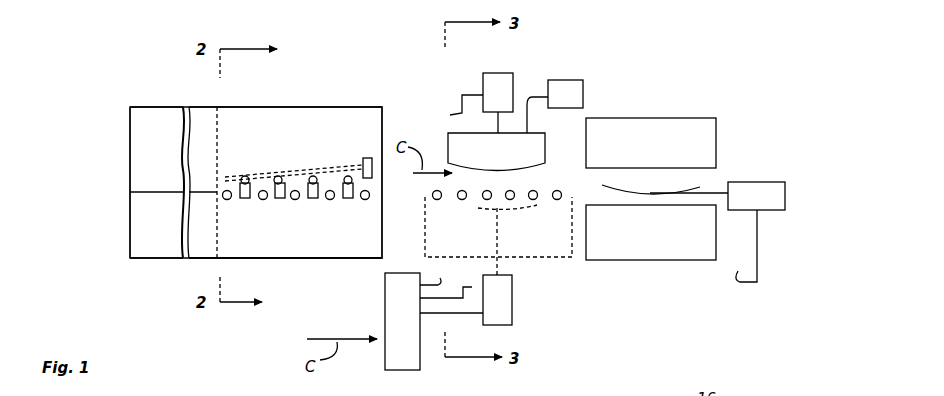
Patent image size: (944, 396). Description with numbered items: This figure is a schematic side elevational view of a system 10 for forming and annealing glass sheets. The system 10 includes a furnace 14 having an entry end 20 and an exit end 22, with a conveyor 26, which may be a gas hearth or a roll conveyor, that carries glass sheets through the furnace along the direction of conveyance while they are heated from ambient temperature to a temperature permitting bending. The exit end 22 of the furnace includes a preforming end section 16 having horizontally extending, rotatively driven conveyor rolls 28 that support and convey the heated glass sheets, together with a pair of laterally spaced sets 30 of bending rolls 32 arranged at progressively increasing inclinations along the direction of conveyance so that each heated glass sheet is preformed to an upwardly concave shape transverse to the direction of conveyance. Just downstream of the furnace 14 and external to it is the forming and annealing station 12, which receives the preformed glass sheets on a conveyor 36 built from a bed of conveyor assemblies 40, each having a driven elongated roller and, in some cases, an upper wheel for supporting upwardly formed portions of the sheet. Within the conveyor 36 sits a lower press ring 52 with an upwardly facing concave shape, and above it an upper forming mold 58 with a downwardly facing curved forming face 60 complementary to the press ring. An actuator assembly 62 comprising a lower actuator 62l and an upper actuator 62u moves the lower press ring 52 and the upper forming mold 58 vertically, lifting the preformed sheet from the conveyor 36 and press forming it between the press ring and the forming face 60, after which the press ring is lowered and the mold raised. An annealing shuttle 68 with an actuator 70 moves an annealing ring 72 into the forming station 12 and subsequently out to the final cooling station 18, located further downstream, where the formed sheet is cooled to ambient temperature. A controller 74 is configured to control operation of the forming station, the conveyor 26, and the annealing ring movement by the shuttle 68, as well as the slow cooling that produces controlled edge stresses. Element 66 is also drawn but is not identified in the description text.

The system 10 is at (592, 68).
The forming and annealing station 12 is at (472, 81).
The furnace 14 is at (163, 72).
The preforming end section 16 is at (325, 100).
The final cooling station 18 is at (672, 100).
The entry end 20 is at (152, 106).
The exit end 22 is at (315, 262).
The conveyor 26 is at (153, 190).
The conveyor rolls 28 is at (363, 199).
The sets of bending rolls 30 is at (292, 163).
The bending rolls 32 is at (346, 176).
The conveyor 36 is at (553, 218).
The conveyor assemblies 40 is at (463, 200).
The lower press ring 52 is at (533, 203).
The upper forming mold 58 is at (440, 134).
The forming face 60 is at (530, 177).
The actuator assembly 62 is at (537, 341).
The upper actuator 62u is at (497, 78).
The lower actuator 62l is at (500, 305).
The valve 66 is at (565, 79).
The annealing shuttle 68 is at (714, 186).
The actuator 70 is at (772, 202).
The annealing ring 72 is at (690, 188).
The controller 74 is at (382, 303).